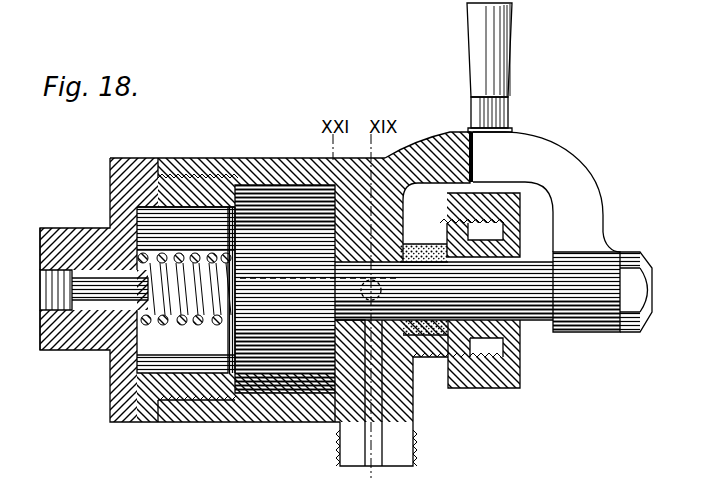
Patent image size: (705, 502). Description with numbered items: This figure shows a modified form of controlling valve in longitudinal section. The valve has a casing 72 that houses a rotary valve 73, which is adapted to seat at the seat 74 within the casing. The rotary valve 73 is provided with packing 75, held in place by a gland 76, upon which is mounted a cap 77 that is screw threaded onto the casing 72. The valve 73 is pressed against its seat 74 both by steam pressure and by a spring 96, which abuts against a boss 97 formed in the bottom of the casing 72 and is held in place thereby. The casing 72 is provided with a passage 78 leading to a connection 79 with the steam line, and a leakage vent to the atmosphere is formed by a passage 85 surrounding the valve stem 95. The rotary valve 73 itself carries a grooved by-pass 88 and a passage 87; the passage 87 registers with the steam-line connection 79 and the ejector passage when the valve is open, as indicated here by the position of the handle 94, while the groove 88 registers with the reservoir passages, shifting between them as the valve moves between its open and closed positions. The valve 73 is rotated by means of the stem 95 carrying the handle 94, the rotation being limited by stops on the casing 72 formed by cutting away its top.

The casing 72 is at (120, 185).
The rotary valve 73 is at (258, 184).
The seat 74 is at (317, 168).
The packing 75 is at (441, 336).
The gland 76 is at (504, 240).
The cap 77 is at (522, 371).
The passage 78 is at (120, 287).
The connection 79 is at (45, 288).
The passage 85 is at (376, 256).
The passage 87 is at (263, 276).
The grooved by-pass 88 is at (273, 423).
The handle 94 is at (560, 151).
The valve stem 95 is at (527, 304).
The spring 96 is at (182, 324).
The boss 97 is at (110, 351).